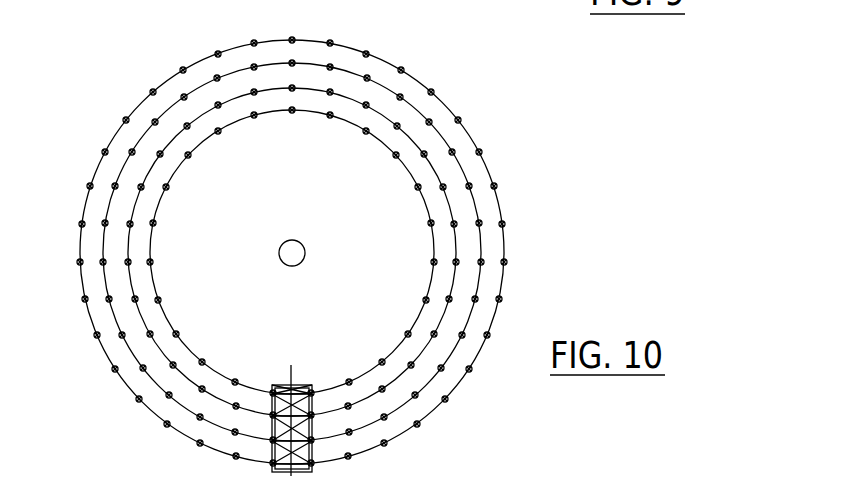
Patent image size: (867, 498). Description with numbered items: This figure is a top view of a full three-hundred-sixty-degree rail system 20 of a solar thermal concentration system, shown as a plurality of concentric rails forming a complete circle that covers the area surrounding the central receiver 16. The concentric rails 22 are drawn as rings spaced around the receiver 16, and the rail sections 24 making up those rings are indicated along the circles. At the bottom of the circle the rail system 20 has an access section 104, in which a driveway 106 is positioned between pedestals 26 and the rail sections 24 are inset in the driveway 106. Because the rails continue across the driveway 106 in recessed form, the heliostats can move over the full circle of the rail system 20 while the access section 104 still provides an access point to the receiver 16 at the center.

The receiver 16 is at (304, 248).
The rail system 20 is at (289, 233).
The coil loop 22 is at (305, 65).
The rail sections 24 is at (457, 254).
The pedestals 26 is at (183, 71).
The access section 104 is at (303, 358).
The driveway 106 is at (307, 453).